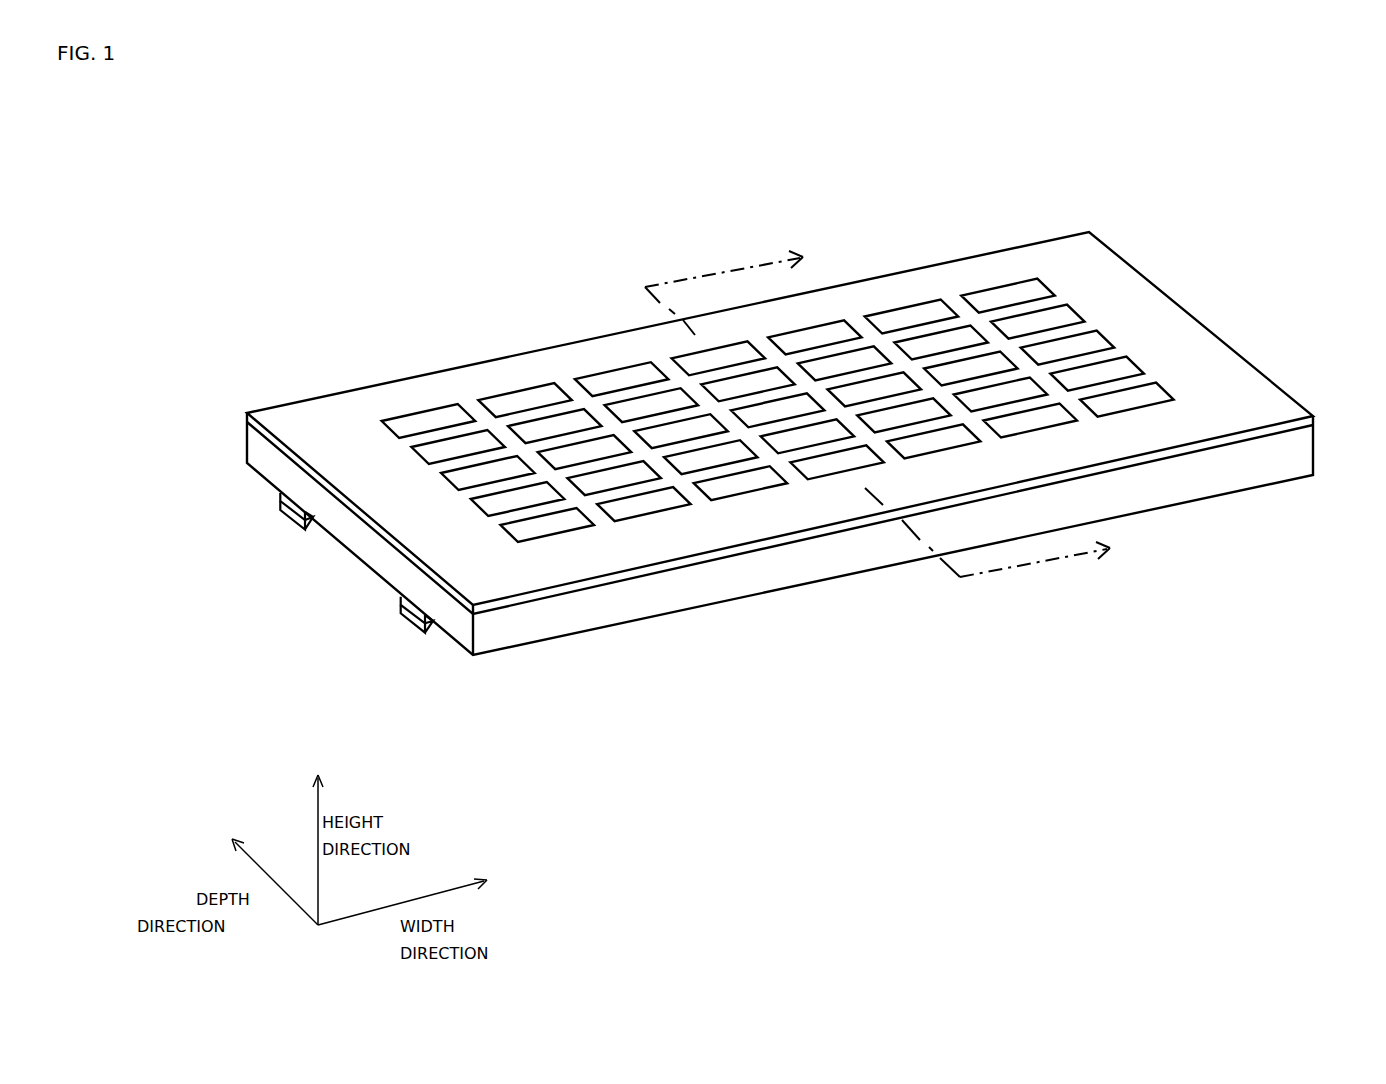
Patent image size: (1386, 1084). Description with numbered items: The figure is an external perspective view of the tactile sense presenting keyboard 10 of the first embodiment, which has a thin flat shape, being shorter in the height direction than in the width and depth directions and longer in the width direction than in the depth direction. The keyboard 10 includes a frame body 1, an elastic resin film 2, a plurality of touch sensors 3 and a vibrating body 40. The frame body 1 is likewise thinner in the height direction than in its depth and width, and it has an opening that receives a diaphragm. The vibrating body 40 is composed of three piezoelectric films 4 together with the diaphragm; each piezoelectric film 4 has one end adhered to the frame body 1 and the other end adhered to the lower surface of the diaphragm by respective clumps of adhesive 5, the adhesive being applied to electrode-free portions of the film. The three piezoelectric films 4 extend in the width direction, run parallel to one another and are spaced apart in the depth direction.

The tactile sense presenting keyboard 10 is at (1053, 150).
The frame body 1 is at (1298, 468).
The elastic resin film 2 is at (1298, 412).
The touch sensors 3 is at (1157, 385).
The piezoelectric film 4 is at (292, 522).
The adhesive 5 is at (277, 500).
The vibrating body 40 is at (300, 645).